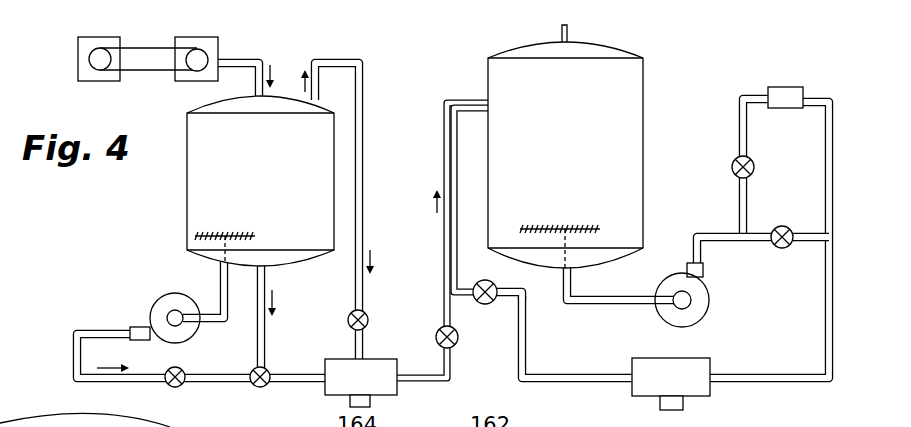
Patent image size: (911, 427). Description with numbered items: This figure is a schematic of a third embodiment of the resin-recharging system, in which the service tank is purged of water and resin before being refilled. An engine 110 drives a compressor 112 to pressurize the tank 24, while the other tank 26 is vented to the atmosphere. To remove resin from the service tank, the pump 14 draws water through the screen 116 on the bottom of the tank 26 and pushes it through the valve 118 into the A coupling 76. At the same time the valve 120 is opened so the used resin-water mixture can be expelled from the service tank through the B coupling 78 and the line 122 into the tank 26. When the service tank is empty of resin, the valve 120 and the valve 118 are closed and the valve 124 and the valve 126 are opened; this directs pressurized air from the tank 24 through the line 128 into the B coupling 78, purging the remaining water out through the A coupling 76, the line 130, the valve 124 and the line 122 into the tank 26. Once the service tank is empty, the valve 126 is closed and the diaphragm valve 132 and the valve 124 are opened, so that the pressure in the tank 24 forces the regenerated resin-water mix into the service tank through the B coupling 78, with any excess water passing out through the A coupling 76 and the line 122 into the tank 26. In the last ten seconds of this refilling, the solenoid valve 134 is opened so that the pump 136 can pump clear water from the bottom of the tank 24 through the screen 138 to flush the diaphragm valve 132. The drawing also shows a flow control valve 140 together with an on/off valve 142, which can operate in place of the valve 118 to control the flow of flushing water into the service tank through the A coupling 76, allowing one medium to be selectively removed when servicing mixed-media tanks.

The pump 14 is at (709, 304).
The tank 24 is at (184, 188).
The tank 26 is at (645, 125).
The A coupling 76 is at (643, 358).
The B coupling 78 is at (383, 359).
The engine 110 is at (105, 37).
The compressor 112 is at (218, 37).
The screen 116 is at (578, 227).
The valve 118 is at (787, 248).
The valve 120 is at (459, 338).
The line 122 is at (444, 176).
The valve 124 is at (484, 280).
The valve 126 is at (366, 314).
The line 128 is at (363, 140).
The line 130 is at (585, 384).
The diaphragm valve 132 is at (257, 388).
The solenoid valve 134 is at (168, 387).
The pump 136 is at (168, 300).
The screen 138 is at (236, 234).
The flow control valve 140 is at (790, 87).
The on/off valve 142 is at (737, 178).